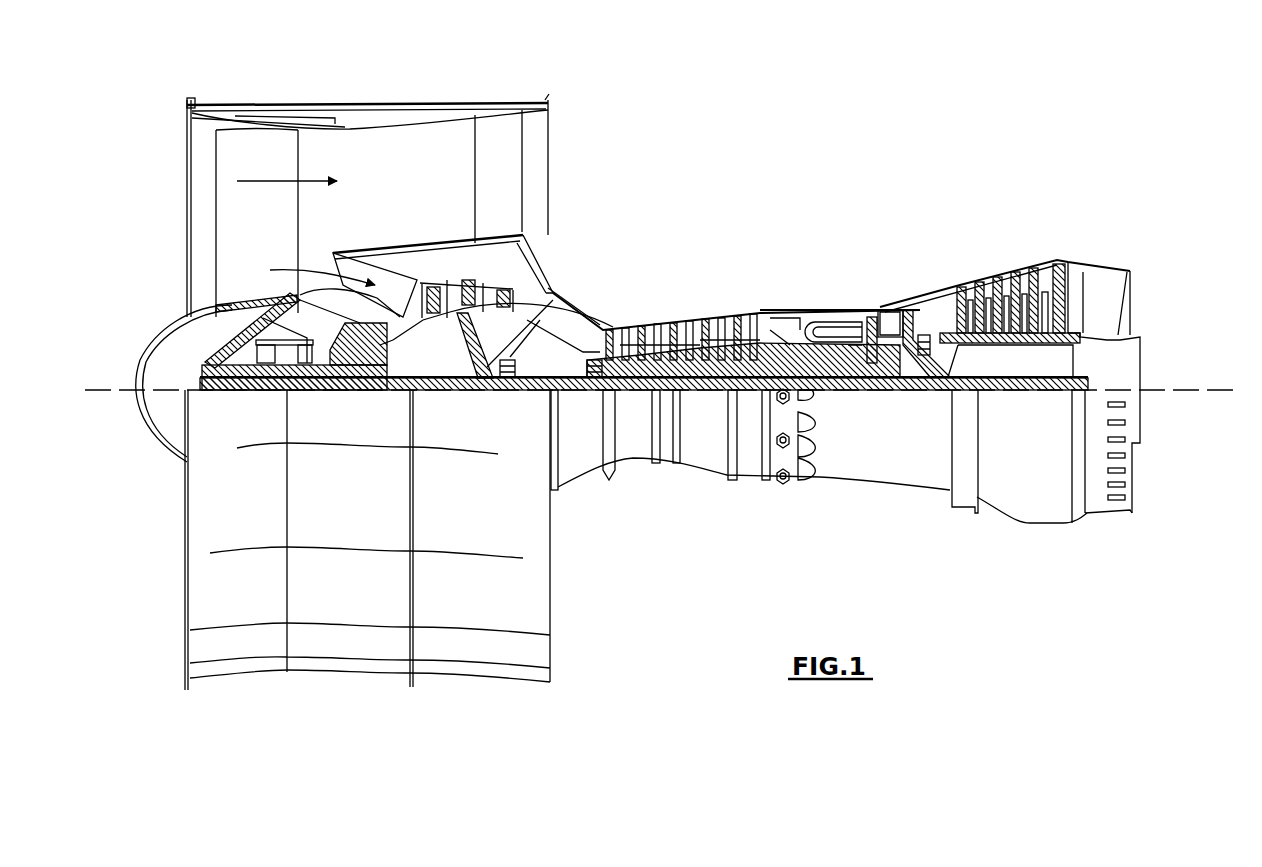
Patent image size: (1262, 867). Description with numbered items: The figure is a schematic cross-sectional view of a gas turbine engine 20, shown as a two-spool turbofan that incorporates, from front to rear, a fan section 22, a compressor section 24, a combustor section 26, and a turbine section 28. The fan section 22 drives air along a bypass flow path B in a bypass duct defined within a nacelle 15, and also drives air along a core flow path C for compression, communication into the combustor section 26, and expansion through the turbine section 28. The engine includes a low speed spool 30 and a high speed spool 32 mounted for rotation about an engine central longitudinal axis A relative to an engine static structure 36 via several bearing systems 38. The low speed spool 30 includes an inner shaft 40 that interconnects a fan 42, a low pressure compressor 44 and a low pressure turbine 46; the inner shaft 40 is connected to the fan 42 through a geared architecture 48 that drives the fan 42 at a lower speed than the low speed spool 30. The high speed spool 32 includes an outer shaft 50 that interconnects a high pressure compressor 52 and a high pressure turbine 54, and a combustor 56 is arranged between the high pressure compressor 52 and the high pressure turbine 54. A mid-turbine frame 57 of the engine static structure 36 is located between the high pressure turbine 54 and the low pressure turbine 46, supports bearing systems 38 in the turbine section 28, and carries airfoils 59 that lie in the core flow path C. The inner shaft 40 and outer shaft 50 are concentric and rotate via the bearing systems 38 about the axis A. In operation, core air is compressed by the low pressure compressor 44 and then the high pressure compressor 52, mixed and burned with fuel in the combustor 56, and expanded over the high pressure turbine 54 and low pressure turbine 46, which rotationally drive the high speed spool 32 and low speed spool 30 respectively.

The gas turbine engine 20 is at (827, 157).
The fan section 22 is at (297, 98).
The nacelle 15 is at (370, 110).
The fan 42 is at (243, 236).
The geared architecture 48 is at (375, 370).
The bearing systems 38 is at (505, 372).
The low pressure compressor 44 is at (500, 290).
The compressor section 24 is at (598, 297).
The high pressure compressor 52 is at (677, 340).
The high speed spool 32 is at (750, 357).
The combustor section 26 is at (822, 287).
The combustor 56 is at (823, 330).
The high pressure turbine 54 is at (887, 303).
The mid-turbine frame 57 is at (930, 303).
The turbine section 28 is at (970, 250).
The low pressure turbine 46 is at (1017, 280).
The airfoils 59 is at (948, 330).
The inner shaft 40 is at (568, 390).
The low speed spool 30 is at (708, 393).
The engine static structure 36 is at (748, 477).
The outer shaft 50 is at (833, 390).
The engine central longitudinal axis A is at (1220, 390).
The bypass flow path B is at (268, 180).
The core flow path C is at (311, 270).